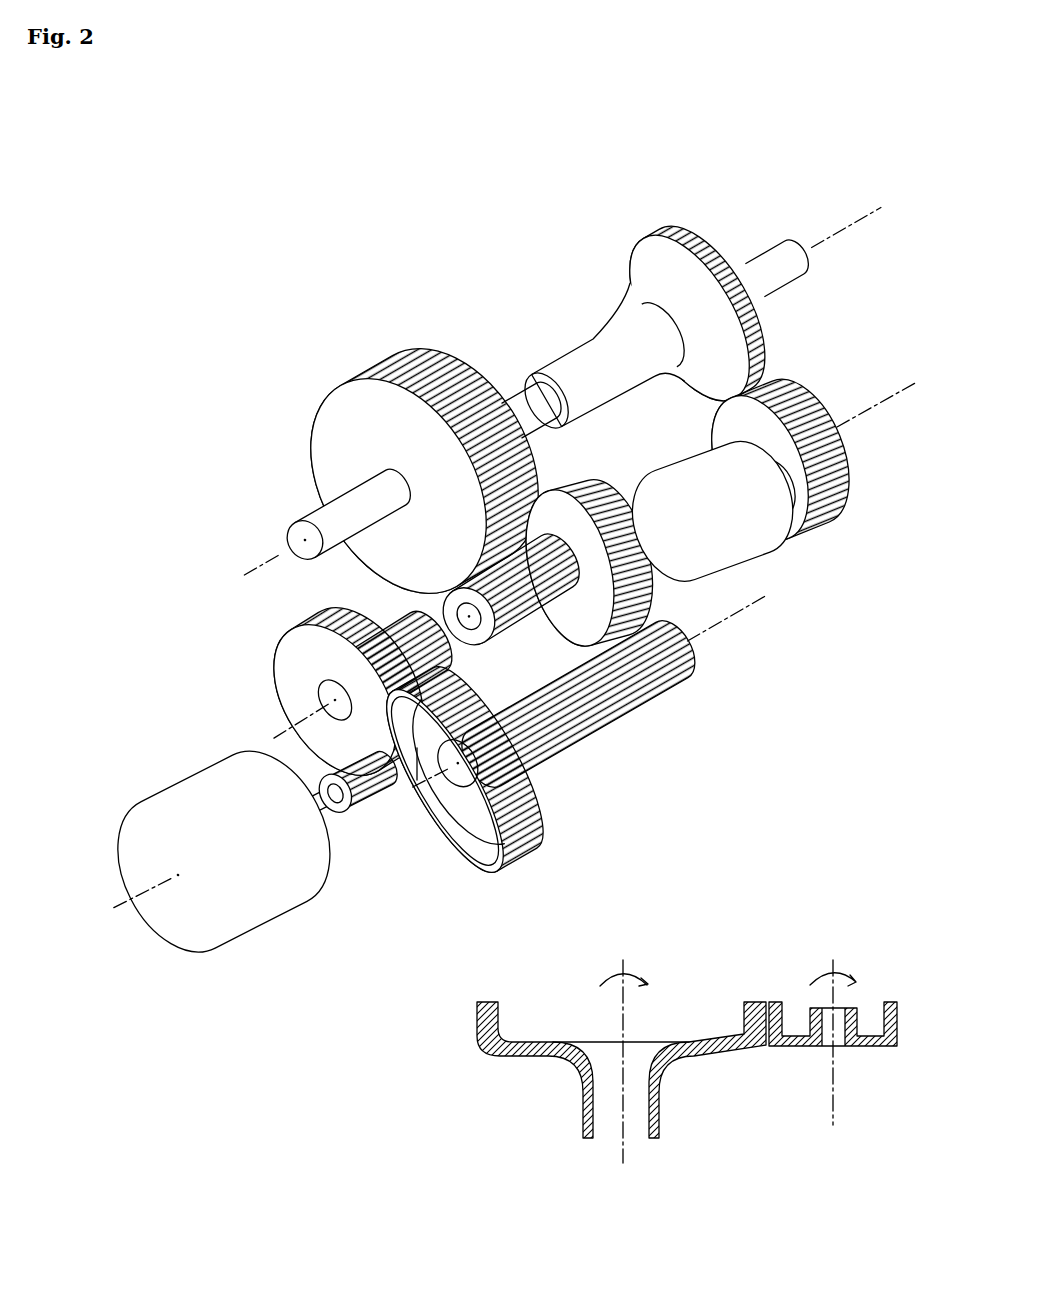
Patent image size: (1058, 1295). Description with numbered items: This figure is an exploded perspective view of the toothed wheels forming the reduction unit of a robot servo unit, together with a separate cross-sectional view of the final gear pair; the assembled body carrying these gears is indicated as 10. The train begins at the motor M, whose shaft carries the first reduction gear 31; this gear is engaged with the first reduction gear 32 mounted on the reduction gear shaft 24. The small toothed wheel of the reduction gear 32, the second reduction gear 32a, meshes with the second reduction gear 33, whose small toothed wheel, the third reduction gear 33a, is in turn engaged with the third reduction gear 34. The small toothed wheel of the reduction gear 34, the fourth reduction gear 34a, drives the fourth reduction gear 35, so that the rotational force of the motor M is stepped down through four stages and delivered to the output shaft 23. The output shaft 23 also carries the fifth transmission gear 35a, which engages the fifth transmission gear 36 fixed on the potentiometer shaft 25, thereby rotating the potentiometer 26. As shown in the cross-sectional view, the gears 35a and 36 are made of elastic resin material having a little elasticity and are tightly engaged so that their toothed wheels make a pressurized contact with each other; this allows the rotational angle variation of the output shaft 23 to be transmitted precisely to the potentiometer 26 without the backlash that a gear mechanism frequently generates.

The rotary body (dish with ring gear) 10 is at (535, 427).
The output shaft 23 is at (763, 273).
The reduction gear shaft 24 is at (298, 722).
The potentiometer shaft 25 is at (890, 398).
The potentiometer 26 is at (753, 533).
The first reduction gear 31 is at (357, 788).
The first reduction gear 32 is at (302, 665).
The second reduction gear 32a is at (403, 627).
The second reduction gear 33 is at (528, 800).
The third reduction gear 33a is at (650, 683).
The third reduction gear 34 is at (651, 588).
The fourth reduction gear 34a is at (508, 623).
The fourth reduction gear 35 is at (398, 365).
The fifth transmission gear 35a is at (565, 367).
The fifth transmission gear 36 is at (797, 380).
The motor M is at (282, 873).